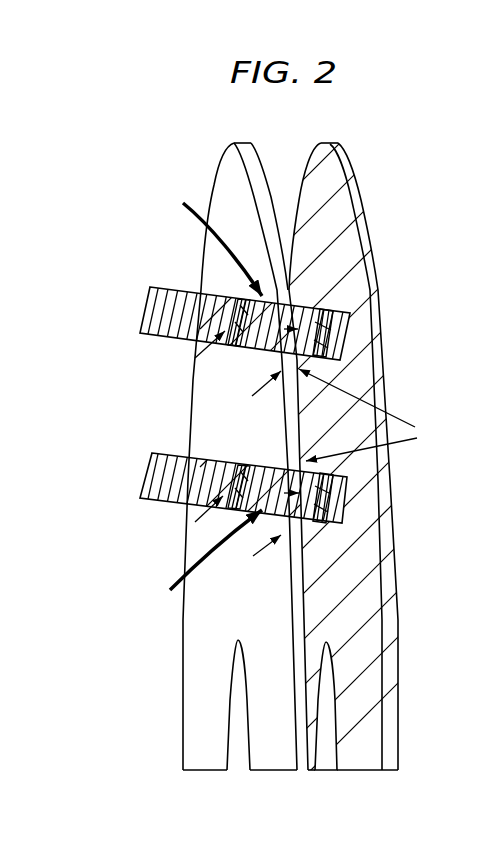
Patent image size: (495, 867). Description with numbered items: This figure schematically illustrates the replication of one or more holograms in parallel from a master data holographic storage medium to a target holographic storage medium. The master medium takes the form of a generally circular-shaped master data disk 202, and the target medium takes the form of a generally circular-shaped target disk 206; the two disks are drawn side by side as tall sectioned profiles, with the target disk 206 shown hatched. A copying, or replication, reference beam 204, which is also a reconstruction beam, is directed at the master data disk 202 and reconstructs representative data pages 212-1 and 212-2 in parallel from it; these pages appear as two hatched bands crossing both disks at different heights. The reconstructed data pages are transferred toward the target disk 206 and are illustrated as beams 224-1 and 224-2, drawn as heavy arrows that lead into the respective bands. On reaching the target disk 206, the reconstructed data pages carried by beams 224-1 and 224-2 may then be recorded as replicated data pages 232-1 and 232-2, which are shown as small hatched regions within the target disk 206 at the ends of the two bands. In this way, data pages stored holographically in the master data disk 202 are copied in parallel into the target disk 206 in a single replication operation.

The master data disk 202 is at (217, 247).
The copying reference beam 204 is at (217, 403).
The target disk 206 is at (328, 247).
The representative data page 212-1 is at (233, 313).
The representative data page 212-2 is at (235, 480).
The reconstructed data page beam 224-1 is at (278, 300).
The reconstructed data page beam 224-2 is at (262, 529).
The replicated data page 232-1 is at (343, 327).
The replicated data page 232-2 is at (333, 493).